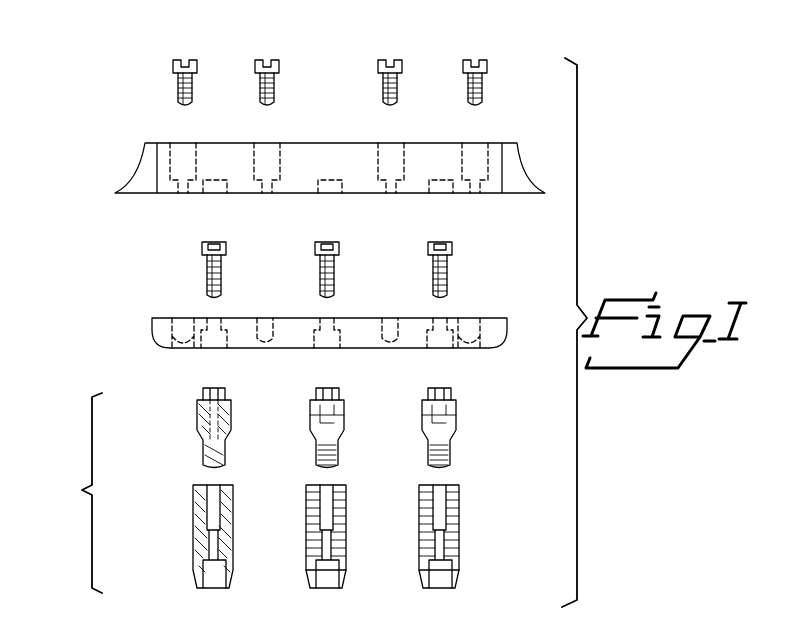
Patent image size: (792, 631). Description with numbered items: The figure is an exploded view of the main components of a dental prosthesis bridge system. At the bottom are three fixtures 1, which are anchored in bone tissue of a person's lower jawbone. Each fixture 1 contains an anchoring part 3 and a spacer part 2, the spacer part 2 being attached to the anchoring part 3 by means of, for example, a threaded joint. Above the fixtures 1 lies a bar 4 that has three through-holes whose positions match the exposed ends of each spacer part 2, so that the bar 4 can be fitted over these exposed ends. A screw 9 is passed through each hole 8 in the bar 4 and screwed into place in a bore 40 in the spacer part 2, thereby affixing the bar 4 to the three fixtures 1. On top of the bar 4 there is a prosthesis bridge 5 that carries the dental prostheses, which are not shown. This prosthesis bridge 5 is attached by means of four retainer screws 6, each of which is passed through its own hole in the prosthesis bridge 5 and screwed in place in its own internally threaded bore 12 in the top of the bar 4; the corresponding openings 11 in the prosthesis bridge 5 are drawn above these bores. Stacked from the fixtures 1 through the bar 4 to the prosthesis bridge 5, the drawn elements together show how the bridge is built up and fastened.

The fixture 1 is at (78, 487).
The spacer part 2 is at (197, 430).
The anchoring part 3 is at (192, 522).
The bar 4 is at (170, 330).
The prosthesis bridge 5 is at (138, 172).
The retainer screw 6 is at (175, 90).
The hole 8 is at (213, 322).
The screw 9 is at (205, 265).
The slot 11 is at (173, 152).
The internally threaded bore 12 is at (182, 323).
The bore 40 is at (210, 390).